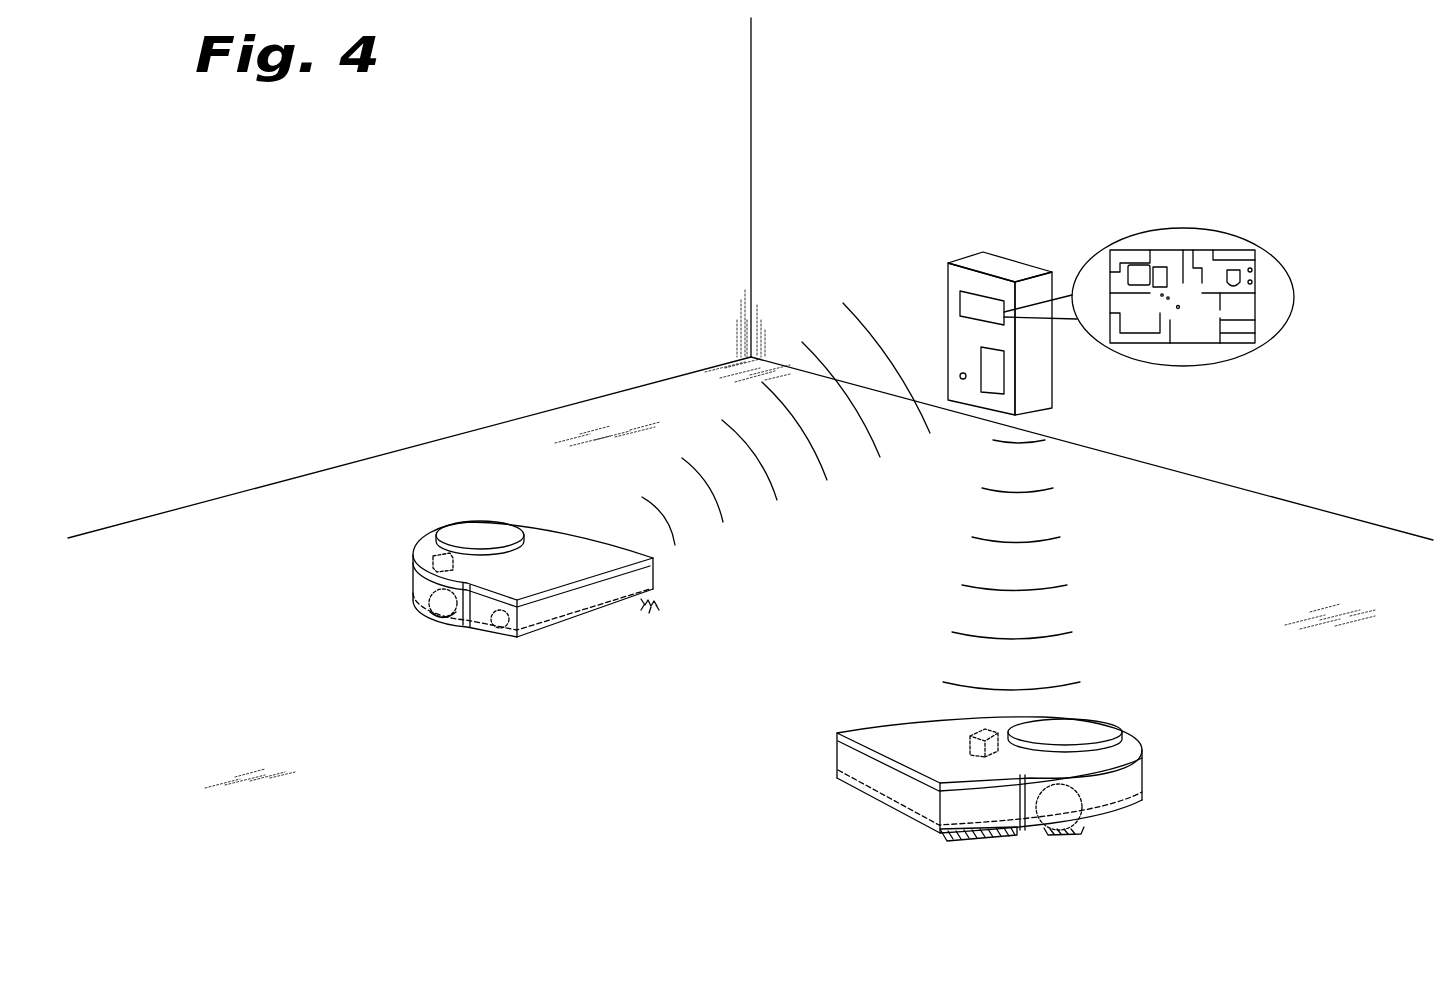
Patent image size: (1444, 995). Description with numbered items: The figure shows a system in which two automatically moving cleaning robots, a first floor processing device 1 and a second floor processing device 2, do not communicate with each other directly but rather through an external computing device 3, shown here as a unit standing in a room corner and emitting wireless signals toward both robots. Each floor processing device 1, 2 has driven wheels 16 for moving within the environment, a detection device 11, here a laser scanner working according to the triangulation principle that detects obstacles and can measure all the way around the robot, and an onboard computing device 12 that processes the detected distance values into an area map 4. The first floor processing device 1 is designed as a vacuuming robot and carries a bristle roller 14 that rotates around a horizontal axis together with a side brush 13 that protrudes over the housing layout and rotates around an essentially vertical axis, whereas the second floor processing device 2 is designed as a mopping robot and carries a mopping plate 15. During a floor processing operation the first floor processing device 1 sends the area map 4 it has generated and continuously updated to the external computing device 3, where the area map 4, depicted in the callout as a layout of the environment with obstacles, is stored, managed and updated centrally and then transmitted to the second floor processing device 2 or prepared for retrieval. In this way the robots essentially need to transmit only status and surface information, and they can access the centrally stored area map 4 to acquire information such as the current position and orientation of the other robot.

The first floor processing device 1 is at (564, 575).
The second floor processing device 2 is at (1039, 789).
The external computing device 3 is at (1024, 232).
The area map 4 is at (1178, 250).
The detection device 11 is at (482, 532).
The computing device 12 is at (445, 560).
The side brush 13 is at (674, 601).
The bristle roller 14 is at (500, 624).
The mopping plate 15 is at (991, 841).
The driven wheels 16 is at (441, 617).